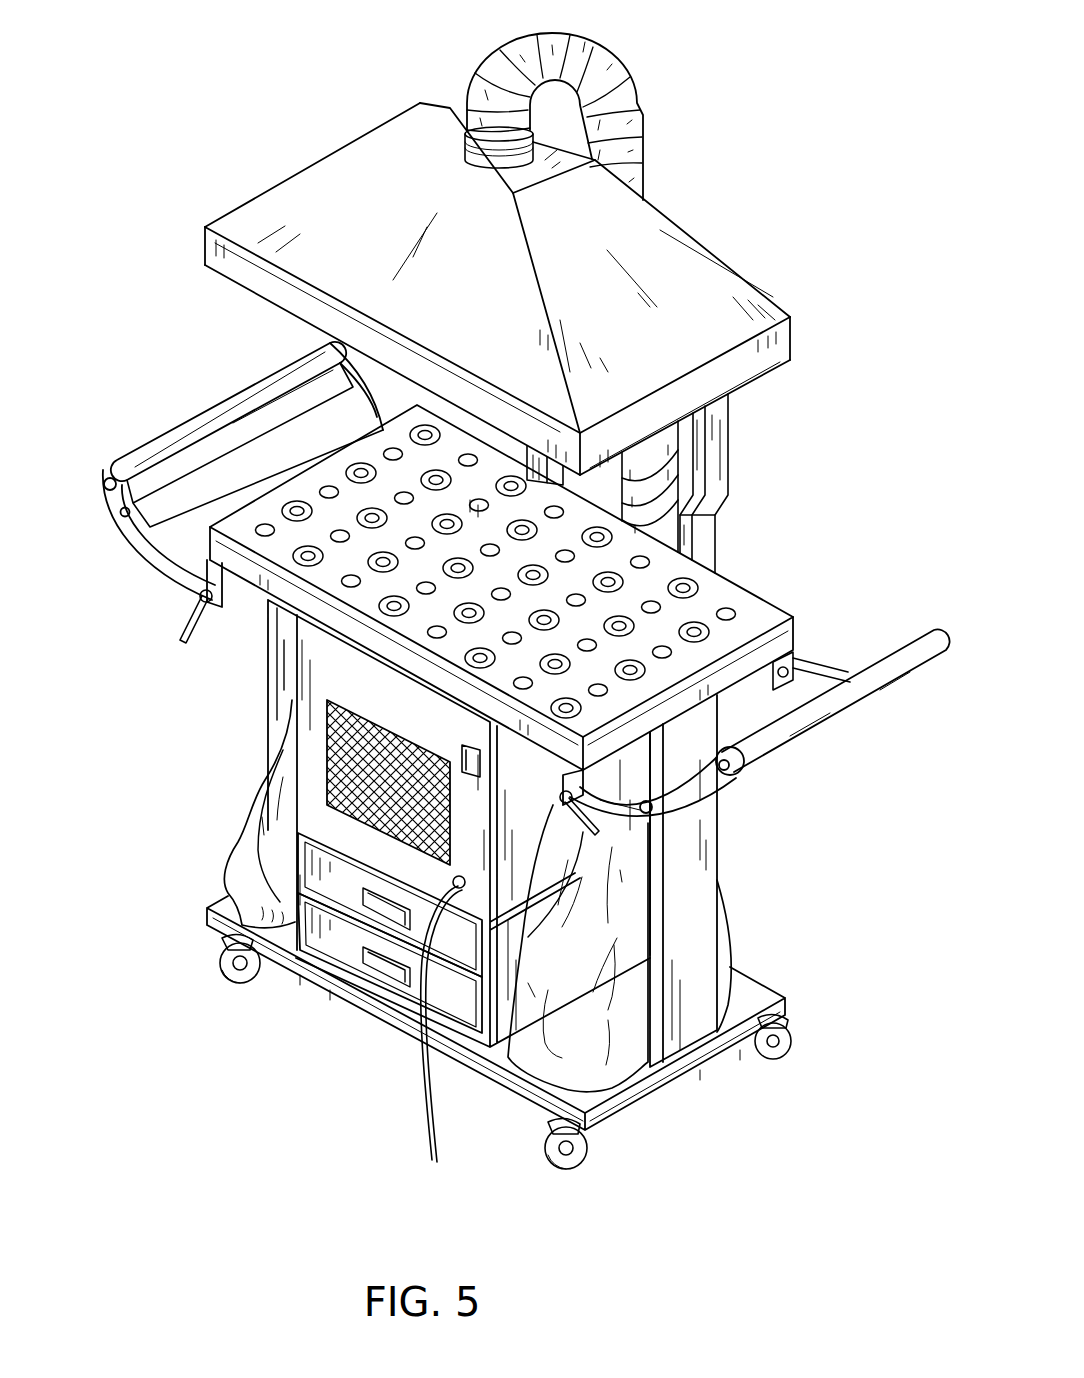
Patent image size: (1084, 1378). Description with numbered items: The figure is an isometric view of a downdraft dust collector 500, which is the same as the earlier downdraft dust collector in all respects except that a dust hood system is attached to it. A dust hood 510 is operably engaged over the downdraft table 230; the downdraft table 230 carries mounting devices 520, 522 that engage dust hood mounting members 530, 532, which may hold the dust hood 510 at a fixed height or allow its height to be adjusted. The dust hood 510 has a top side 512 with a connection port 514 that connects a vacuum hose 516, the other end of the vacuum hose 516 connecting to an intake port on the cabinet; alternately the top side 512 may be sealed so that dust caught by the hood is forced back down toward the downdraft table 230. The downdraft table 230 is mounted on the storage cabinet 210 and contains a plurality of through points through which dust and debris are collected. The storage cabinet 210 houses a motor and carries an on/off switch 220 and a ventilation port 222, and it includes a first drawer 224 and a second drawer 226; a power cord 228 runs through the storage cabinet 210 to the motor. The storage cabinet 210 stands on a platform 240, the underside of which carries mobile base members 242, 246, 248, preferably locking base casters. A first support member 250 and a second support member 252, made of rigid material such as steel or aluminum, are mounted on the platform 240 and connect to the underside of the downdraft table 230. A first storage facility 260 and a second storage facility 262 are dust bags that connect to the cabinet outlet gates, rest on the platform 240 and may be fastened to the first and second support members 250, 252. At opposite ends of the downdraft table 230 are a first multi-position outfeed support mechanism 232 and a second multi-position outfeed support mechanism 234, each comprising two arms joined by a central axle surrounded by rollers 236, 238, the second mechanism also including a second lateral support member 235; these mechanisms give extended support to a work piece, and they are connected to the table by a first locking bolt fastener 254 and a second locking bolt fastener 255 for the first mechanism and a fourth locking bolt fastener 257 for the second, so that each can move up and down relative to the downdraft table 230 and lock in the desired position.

The downdraft dust collector 500 is at (700, 104).
The dust hood 510 is at (762, 360).
The top side 512 is at (443, 147).
The connection port 514 is at (458, 150).
The vacuum hose 516 is at (630, 133).
The mounting device 520 is at (718, 567).
The mounting device 522 is at (650, 447).
The dust hood mounting member 530 is at (718, 527).
The dust hood mounting member 532 is at (495, 443).
The storage cabinet 210 is at (313, 690).
The on/off switch 220 is at (355, 818).
The ventilation port 222 is at (327, 743).
The first drawer 224 is at (322, 942).
The second drawer 226 is at (358, 908).
The power cord 228 is at (428, 1130).
The downdraft table 230 is at (755, 618).
The first multi-position outfeed support mechanism 232 is at (594, 803).
The second multi-position outfeed support mechanism 234 is at (116, 494).
The second lateral support member 235 is at (307, 408).
The roller 236 is at (795, 727).
The roller 238 is at (223, 410).
The platform 240 is at (212, 907).
The mobile base member 242 is at (786, 1056).
The mobile base member 246 is at (218, 960).
The mobile base member 248 is at (590, 1155).
The first support member 250 is at (705, 837).
The second support member 252 is at (276, 645).
The first locking bolt fastener 254 is at (813, 687).
The second locking bolt fastener 255 is at (478, 955).
The fourth locking bolt fastener 257 is at (195, 598).
The first storage facility 260 is at (535, 1062).
The second storage facility 262 is at (277, 787).